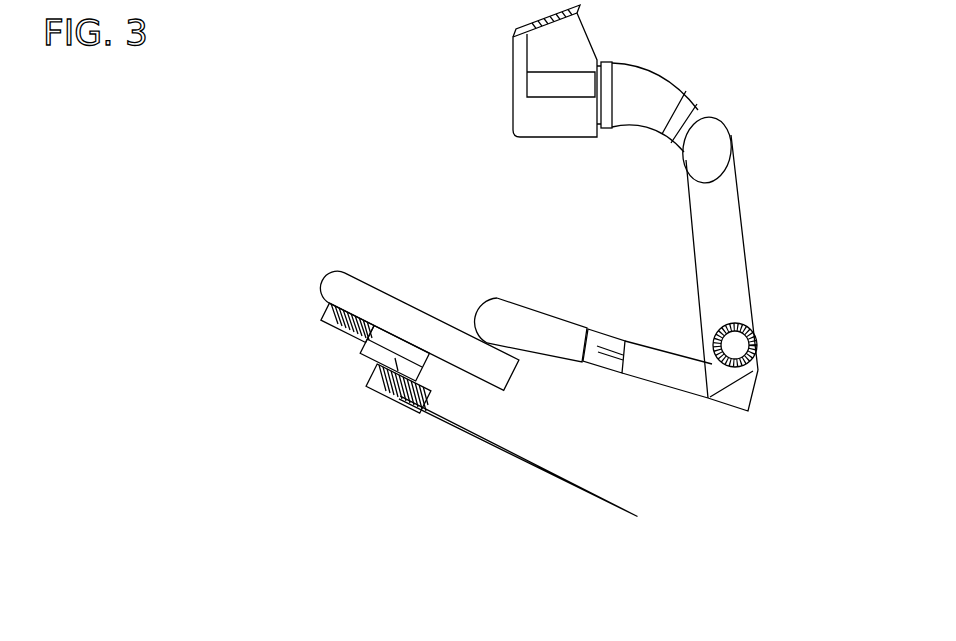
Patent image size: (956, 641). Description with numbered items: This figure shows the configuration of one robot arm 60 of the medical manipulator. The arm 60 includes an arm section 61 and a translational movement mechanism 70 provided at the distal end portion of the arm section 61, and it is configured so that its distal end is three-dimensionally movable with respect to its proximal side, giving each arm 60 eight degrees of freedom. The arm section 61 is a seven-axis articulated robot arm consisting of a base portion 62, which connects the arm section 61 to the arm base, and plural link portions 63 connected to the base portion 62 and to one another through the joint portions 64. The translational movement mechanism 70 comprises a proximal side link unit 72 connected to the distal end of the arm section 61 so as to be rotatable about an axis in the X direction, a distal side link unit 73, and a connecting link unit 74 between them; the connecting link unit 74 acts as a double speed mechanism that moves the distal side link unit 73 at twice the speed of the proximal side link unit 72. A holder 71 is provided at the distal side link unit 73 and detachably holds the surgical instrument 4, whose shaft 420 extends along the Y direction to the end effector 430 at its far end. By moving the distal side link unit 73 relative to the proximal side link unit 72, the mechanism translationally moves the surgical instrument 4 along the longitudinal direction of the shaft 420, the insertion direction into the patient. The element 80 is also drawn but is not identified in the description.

The arm 60 is at (306, 36).
The arm section 61 is at (774, 199).
The base portion 62 is at (512, 30).
The link portions 63 is at (655, 95).
The joint portions 64 is at (607, 61).
The translational movement mechanism 70 is at (327, 262).
The holder 71 is at (421, 394).
The proximal side link unit 72 is at (474, 327).
The distal side link unit 73 is at (423, 357).
The connecting link unit 74 is at (393, 309).
The fixing member 80 is at (340, 341).
The surgical instrument 4 is at (435, 445).
The shaft 420 is at (523, 466).
The end effector 430 is at (627, 519).